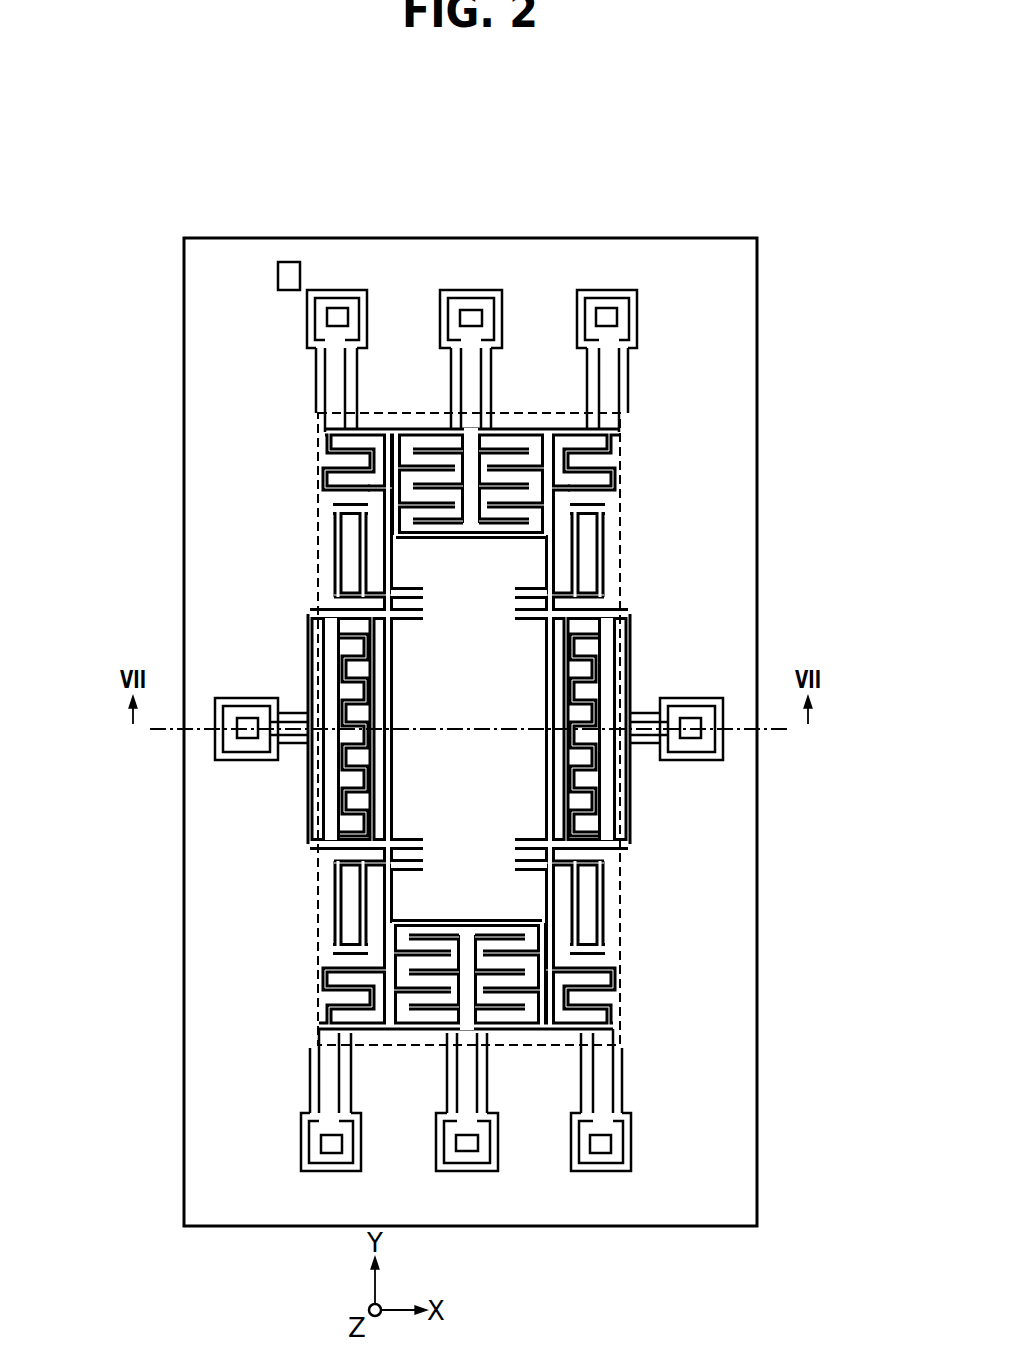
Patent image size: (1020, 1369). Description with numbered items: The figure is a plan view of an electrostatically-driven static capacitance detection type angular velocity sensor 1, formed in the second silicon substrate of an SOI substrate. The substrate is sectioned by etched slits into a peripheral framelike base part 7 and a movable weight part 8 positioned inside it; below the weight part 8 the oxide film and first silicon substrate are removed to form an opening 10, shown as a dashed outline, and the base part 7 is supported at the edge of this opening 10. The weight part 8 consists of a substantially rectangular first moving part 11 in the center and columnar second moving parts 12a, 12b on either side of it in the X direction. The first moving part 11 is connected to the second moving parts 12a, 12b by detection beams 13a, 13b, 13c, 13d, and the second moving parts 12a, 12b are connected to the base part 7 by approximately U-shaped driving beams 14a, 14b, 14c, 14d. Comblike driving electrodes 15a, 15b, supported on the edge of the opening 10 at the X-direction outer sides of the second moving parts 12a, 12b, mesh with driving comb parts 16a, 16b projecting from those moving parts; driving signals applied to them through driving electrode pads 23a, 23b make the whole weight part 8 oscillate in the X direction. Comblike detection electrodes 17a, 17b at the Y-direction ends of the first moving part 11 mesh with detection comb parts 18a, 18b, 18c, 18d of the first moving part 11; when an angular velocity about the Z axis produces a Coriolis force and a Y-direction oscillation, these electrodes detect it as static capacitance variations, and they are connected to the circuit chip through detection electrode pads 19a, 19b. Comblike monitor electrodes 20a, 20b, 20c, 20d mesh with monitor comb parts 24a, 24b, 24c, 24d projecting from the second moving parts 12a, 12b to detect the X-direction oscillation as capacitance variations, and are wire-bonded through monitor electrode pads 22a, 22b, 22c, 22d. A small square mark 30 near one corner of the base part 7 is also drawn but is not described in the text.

The angular velocity sensor 1 is at (470, 669).
The base part 7 is at (642, 264).
The weight part 8 is at (458, 695).
The opening 10 is at (619, 858).
The first moving part 11 is at (485, 568).
The second moving part 12a is at (560, 488).
The second moving part 12b is at (378, 488).
The detection beam 13a is at (601, 537).
The detection beam 13b is at (337, 537).
The detection beam 13c is at (595, 921).
The detection beam 13d is at (343, 921).
The driving beam 14a is at (593, 505).
The driving beam 14b is at (345, 505).
The driving beam 14c is at (601, 968).
The driving beam 14d is at (337, 968).
The driving electrode 15a is at (626, 700).
The driving electrode 15b is at (312, 700).
The driving comb part 16a is at (591, 635).
The driving comb part 16b is at (347, 635).
The detection electrode 17a is at (500, 302).
The detection electrode 17b is at (498, 1165).
The detection comb part 18a is at (605, 413).
The detection comb part 18b is at (333, 413).
The detection comb part 18c is at (611, 1097).
The detection comb part 18d is at (327, 1097).
The detection electrode pad 19a is at (476, 318).
The detection electrode pad 19b is at (467, 1150).
The monitor electrode 20a is at (610, 363).
The monitor electrode 20b is at (330, 363).
The monitor electrode 20c is at (611, 1147).
The monitor electrode 20d is at (327, 1147).
The monitor electrode pad 22a is at (625, 310).
The monitor electrode pad 22b is at (310, 310).
The monitor electrode pad 22c is at (635, 1150).
The monitor electrode pad 22d is at (303, 1150).
The driving electrode pad 23a is at (703, 737).
The driving electrode pad 23b is at (235, 737).
The monitor comb part 24a is at (608, 430).
The monitor comb part 24b is at (330, 430).
The monitor comb part 24c is at (608, 1020).
The monitor comb part 24d is at (330, 1020).
The alignment mark 30 is at (280, 262).